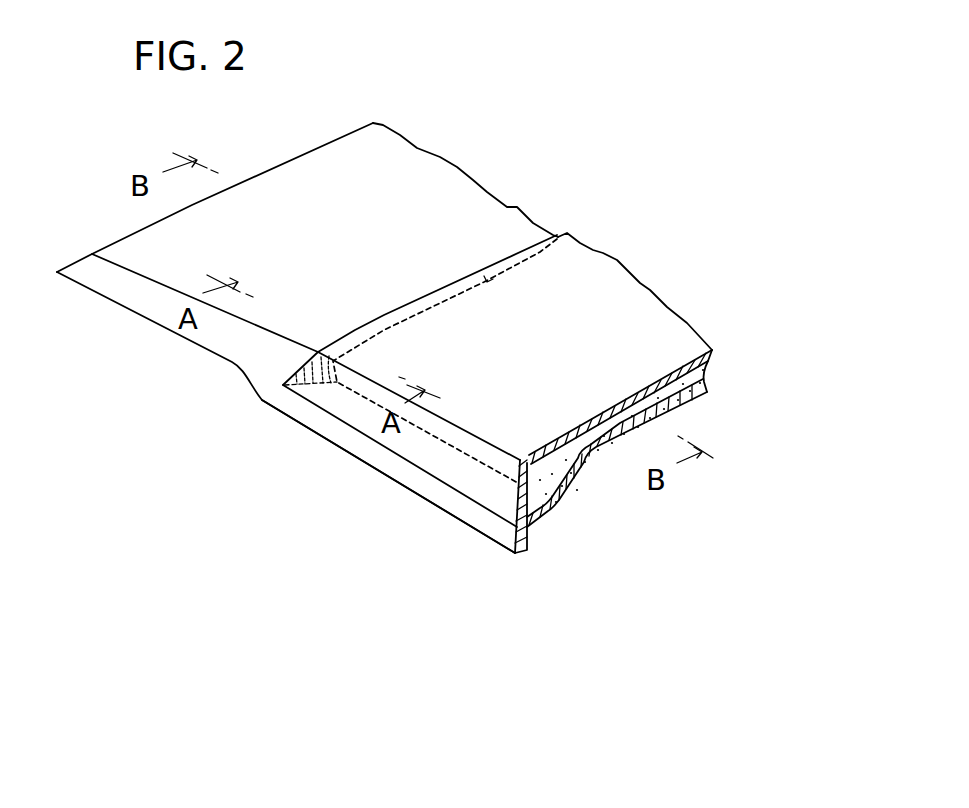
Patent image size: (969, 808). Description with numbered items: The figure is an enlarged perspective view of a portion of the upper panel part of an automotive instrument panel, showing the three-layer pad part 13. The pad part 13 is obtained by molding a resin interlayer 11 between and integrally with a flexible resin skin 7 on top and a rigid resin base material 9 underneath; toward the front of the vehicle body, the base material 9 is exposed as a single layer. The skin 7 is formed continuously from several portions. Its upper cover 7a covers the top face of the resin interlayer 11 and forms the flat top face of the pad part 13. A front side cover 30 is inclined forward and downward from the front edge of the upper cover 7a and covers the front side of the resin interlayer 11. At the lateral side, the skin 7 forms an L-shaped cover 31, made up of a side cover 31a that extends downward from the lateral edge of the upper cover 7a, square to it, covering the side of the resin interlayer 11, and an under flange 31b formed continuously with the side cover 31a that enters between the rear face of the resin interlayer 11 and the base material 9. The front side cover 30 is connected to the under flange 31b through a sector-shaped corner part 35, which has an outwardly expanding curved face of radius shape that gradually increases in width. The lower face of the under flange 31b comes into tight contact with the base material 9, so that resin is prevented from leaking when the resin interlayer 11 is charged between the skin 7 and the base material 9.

The base material 9 is at (412, 213).
The front side cover 30 is at (485, 273).
The skin 7 is at (587, 288).
The upper cover 7a is at (593, 333).
The pad part 13 is at (732, 327).
The resin interlayer 11 is at (700, 387).
The sector-shaped corner part 35 is at (311, 388).
The side cover 31a is at (480, 473).
The under flange 31b is at (533, 523).
The L-shaped cover 31 is at (557, 630).